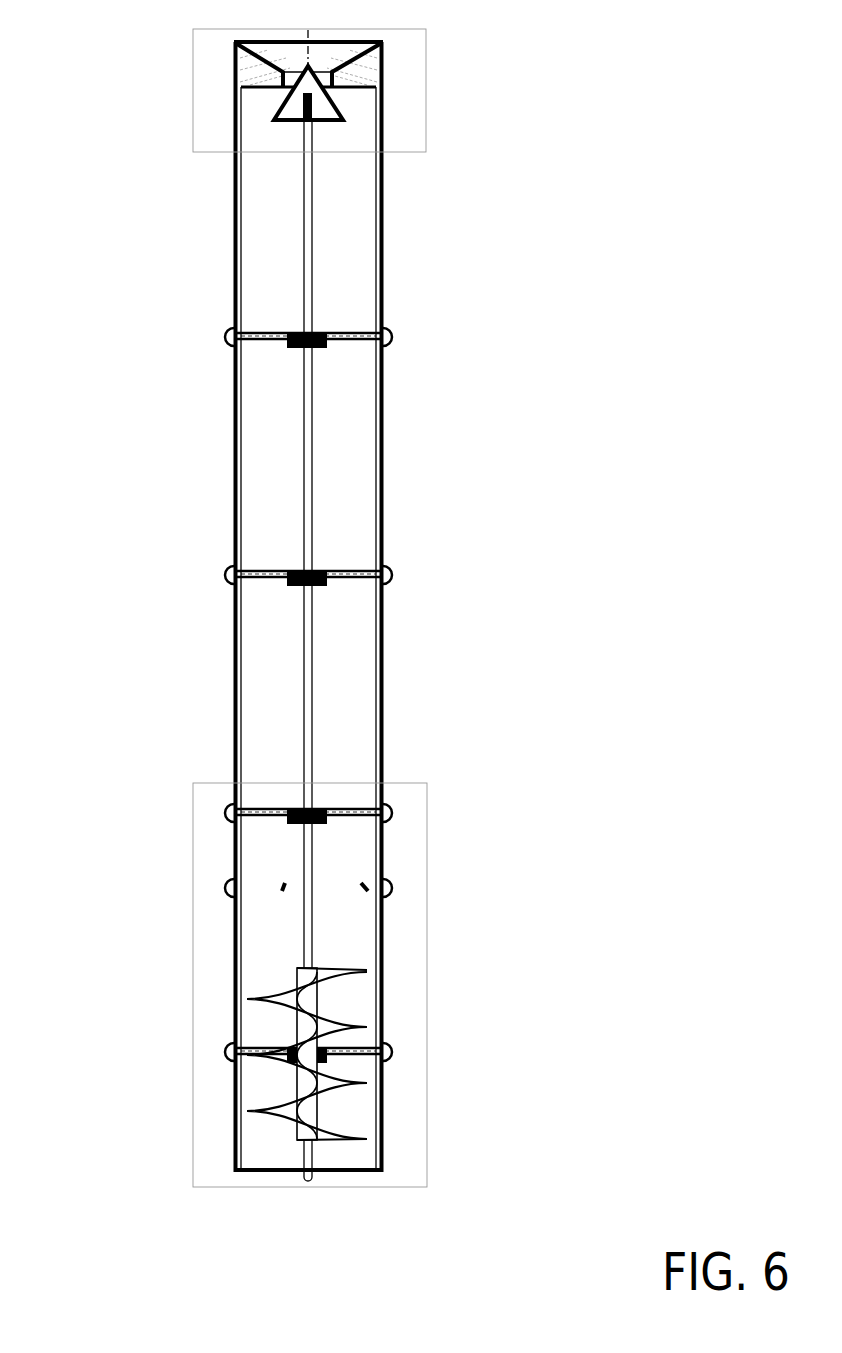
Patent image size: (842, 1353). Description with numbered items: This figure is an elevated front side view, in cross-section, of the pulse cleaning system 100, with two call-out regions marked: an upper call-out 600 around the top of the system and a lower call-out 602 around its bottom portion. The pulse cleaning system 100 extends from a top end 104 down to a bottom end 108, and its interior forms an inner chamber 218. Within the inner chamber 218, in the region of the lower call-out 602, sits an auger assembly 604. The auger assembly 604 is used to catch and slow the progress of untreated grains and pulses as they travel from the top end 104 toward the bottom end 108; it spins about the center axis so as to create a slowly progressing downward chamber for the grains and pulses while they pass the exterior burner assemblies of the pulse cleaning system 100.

The pulse cleaning system 100 is at (605, 90).
The top end 104 is at (327, 43).
The bottom end 108 is at (342, 1170).
The inner chamber 218 is at (355, 458).
The upper call-out 600 is at (193, 113).
The lower call-out 602 is at (193, 860).
The auger assembly 604 is at (348, 976).